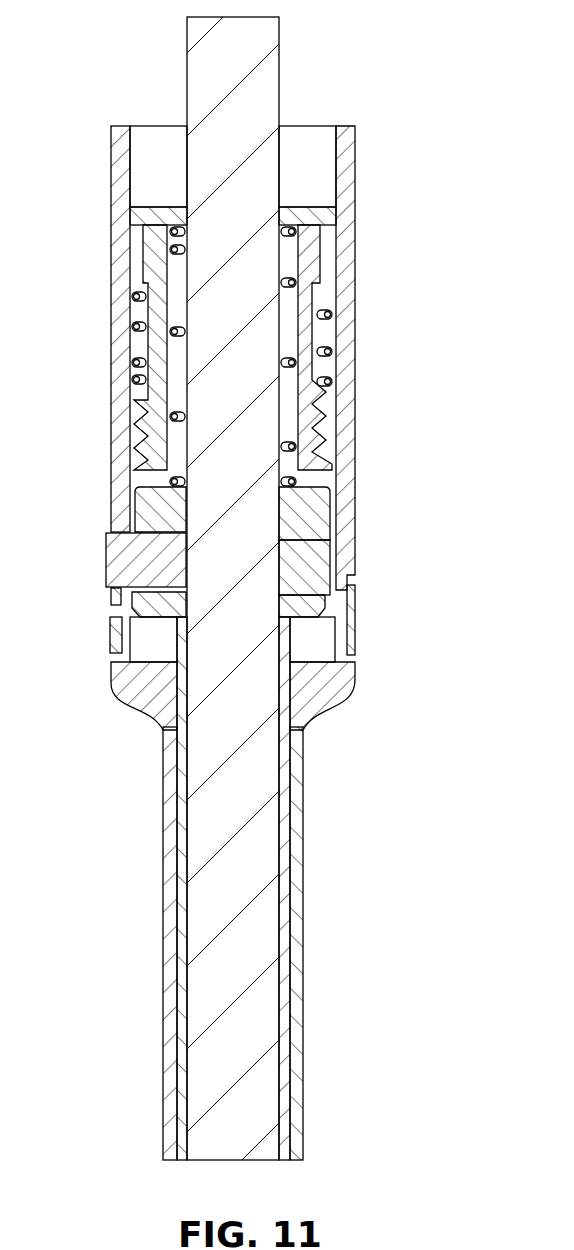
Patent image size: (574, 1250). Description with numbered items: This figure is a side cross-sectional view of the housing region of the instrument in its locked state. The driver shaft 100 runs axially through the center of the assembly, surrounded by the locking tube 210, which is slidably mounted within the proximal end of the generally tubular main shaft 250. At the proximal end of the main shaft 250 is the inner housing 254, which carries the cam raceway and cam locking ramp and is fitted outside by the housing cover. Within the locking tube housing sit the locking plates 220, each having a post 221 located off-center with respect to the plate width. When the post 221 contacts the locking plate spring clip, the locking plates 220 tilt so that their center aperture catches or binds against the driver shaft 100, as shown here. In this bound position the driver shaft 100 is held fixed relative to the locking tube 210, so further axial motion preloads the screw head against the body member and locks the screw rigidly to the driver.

The driver shaft 100 is at (281, 81).
The inner housing 254 is at (355, 161).
The locking plates 220 is at (314, 512).
The post 221 is at (103, 560).
The locking tube 210 is at (285, 922).
The main shaft 250 is at (303, 1060).